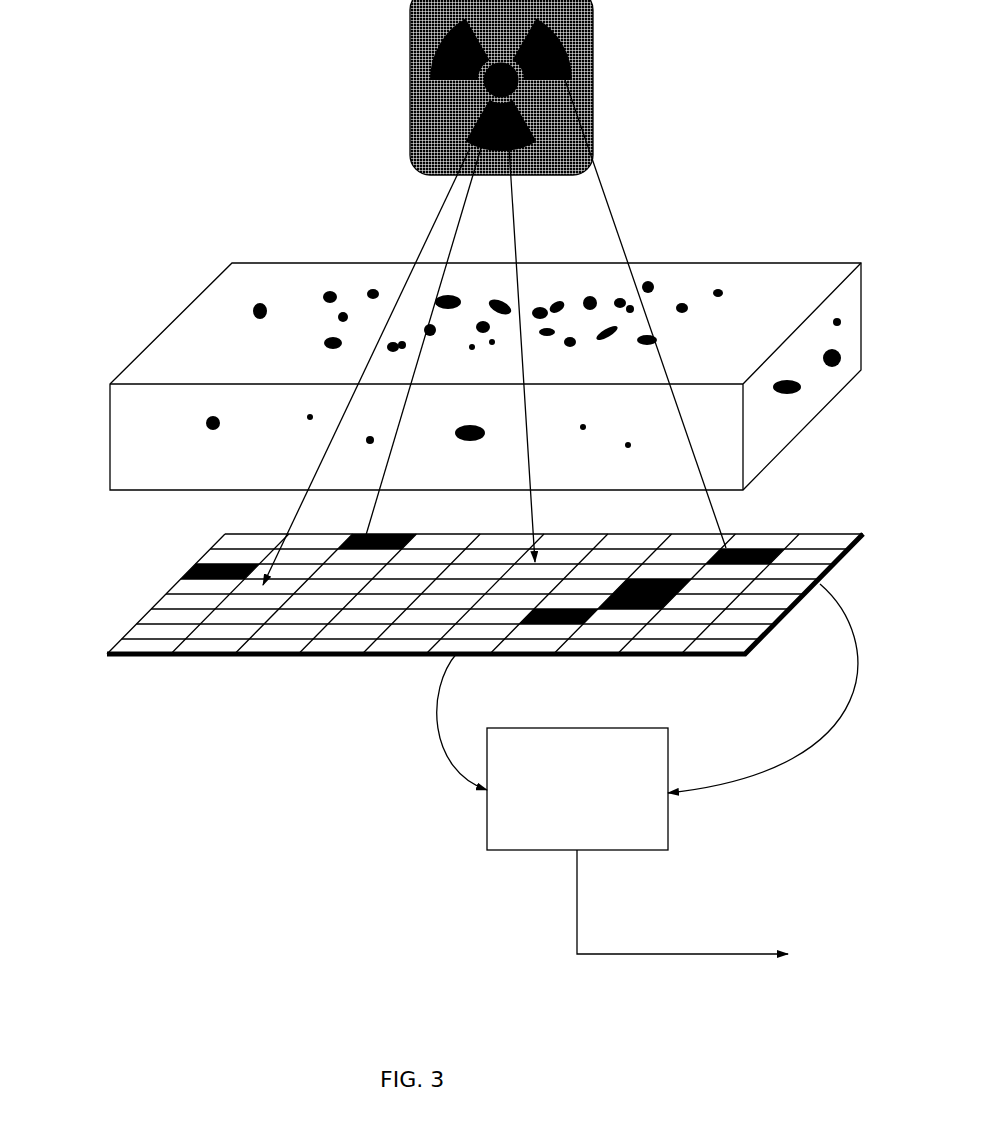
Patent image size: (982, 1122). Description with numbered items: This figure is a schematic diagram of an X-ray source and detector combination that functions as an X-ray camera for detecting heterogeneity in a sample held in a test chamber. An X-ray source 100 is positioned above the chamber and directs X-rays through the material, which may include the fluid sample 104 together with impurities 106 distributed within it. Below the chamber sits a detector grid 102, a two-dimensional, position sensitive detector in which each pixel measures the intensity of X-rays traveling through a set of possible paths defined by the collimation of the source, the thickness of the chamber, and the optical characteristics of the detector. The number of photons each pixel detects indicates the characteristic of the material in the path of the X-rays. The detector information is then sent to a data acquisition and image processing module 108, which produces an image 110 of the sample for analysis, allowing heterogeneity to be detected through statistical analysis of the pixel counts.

The X-ray source 100 is at (494, 292).
The detector grid 102 is at (261, 660).
The fluid sample 104 is at (220, 355).
The impurities 106 is at (493, 303).
The data acquisition and image processing module 108 is at (647, 717).
The image 110 is at (712, 909).